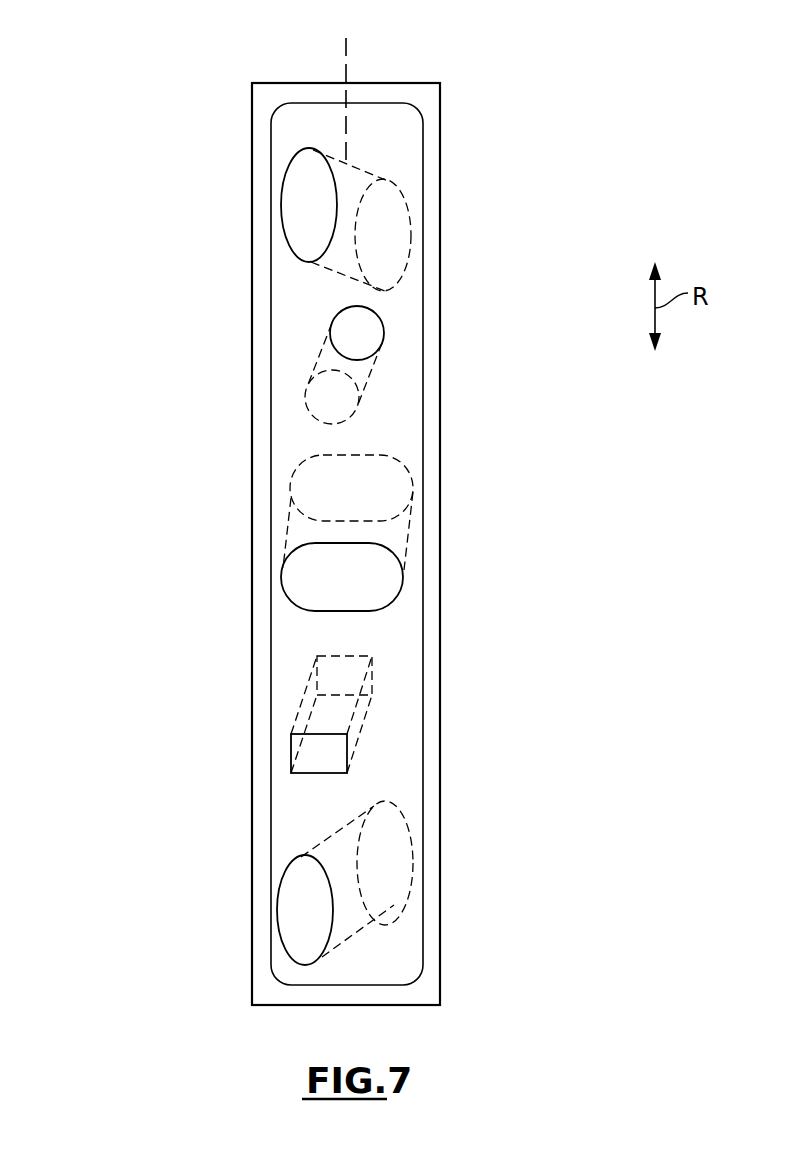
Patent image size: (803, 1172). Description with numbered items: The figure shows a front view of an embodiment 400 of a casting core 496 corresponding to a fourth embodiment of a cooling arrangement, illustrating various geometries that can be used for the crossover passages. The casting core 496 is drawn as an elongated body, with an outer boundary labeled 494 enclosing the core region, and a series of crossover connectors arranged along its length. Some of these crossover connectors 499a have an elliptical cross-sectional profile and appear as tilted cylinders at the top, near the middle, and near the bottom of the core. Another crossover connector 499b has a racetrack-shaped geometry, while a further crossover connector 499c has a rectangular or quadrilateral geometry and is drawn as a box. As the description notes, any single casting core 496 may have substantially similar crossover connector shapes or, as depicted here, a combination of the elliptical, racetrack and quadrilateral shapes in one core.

The embodiment 400 is at (153, 73).
The housing 494 is at (252, 895).
The casting core 496 is at (193, 182).
The crossover connectors 499a is at (370, 172).
The crossover connector 499b is at (408, 535).
The crossover connector 499c is at (367, 713).